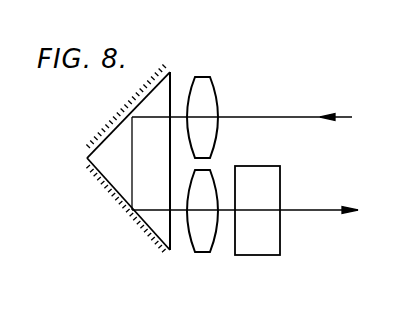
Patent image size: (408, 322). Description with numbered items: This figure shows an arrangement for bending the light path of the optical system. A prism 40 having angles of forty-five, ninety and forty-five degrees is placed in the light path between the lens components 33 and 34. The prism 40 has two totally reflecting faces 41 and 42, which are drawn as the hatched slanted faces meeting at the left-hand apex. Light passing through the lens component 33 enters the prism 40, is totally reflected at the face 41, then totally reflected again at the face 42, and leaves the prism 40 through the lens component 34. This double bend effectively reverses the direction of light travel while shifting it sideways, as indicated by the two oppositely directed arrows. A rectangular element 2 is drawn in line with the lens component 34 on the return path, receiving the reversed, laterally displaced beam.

The detector / target element 2 is at (268, 177).
The lens component 33 is at (209, 98).
The lens component 34 is at (203, 253).
The prism 40 is at (130, 150).
The totally reflecting face 41 is at (115, 138).
The totally reflecting face 42 is at (120, 194).